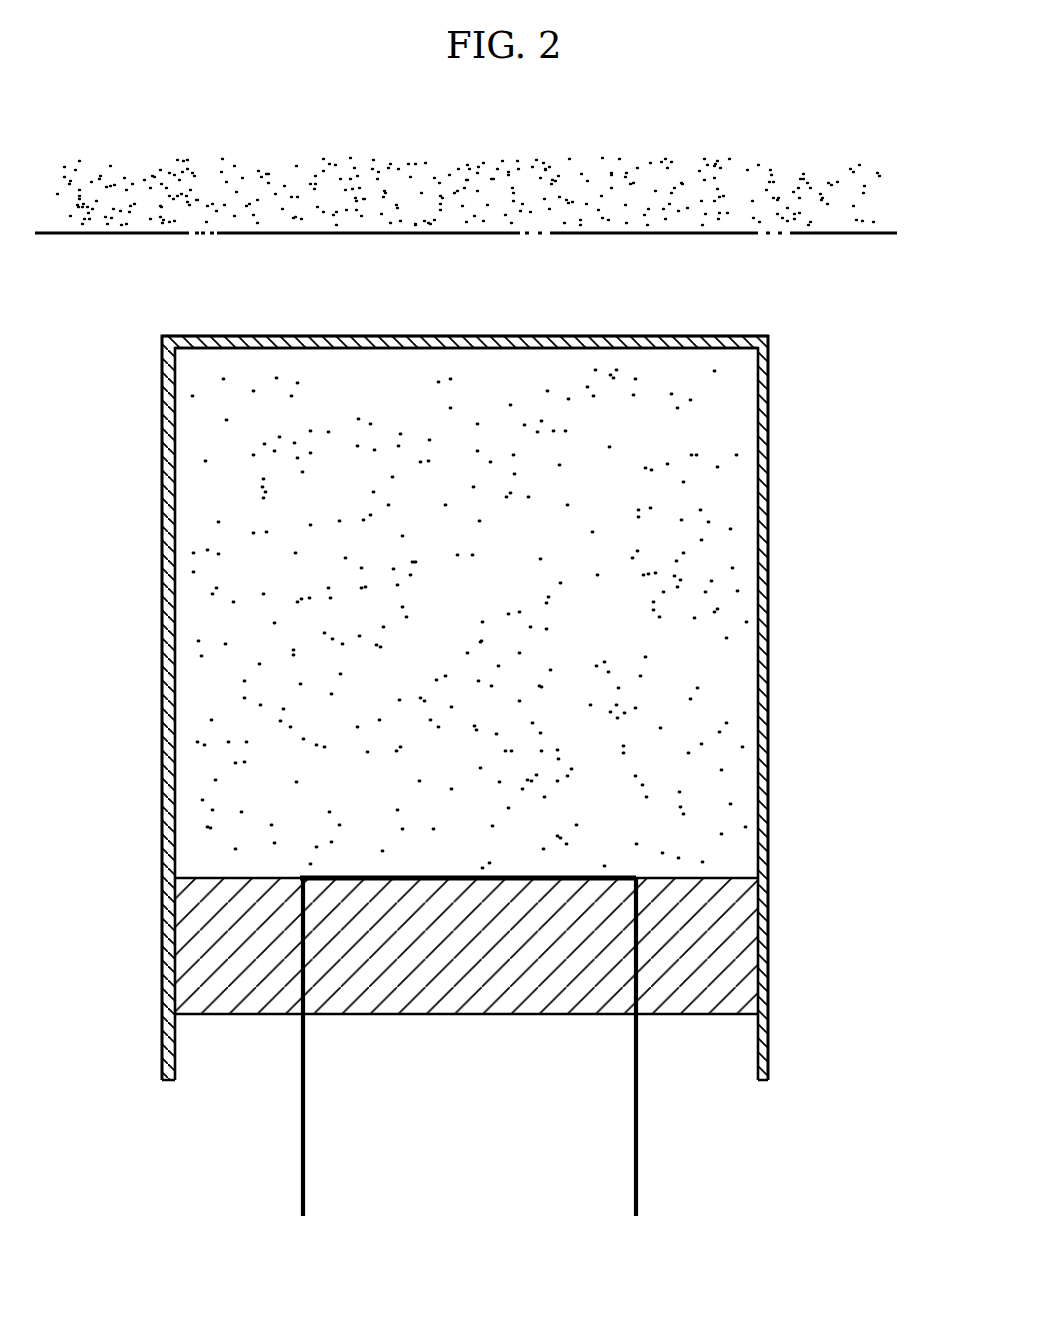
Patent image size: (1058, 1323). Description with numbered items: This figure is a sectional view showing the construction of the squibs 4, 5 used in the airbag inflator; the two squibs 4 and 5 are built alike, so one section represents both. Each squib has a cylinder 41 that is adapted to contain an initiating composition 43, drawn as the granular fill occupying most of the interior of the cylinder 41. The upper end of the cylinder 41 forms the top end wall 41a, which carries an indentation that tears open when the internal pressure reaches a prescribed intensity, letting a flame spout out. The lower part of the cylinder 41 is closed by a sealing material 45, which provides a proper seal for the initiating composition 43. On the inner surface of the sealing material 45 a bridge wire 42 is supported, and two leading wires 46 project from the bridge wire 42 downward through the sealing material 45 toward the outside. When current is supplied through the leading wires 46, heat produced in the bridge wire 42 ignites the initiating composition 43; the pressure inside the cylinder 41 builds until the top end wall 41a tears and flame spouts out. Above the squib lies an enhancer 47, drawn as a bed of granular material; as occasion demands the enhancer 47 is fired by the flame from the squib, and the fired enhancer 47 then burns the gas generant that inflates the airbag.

The squib 4 is at (522, 678).
The squib 5 is at (798, 371).
The cylinder 41 is at (162, 527).
The container top plate 41a is at (599, 336).
The bridge wire 42 is at (612, 876).
The initiating composition 43 is at (738, 543).
The sealing material 45 is at (745, 932).
The leading wires 46 is at (636, 1172).
The enhancer 47 is at (502, 185).